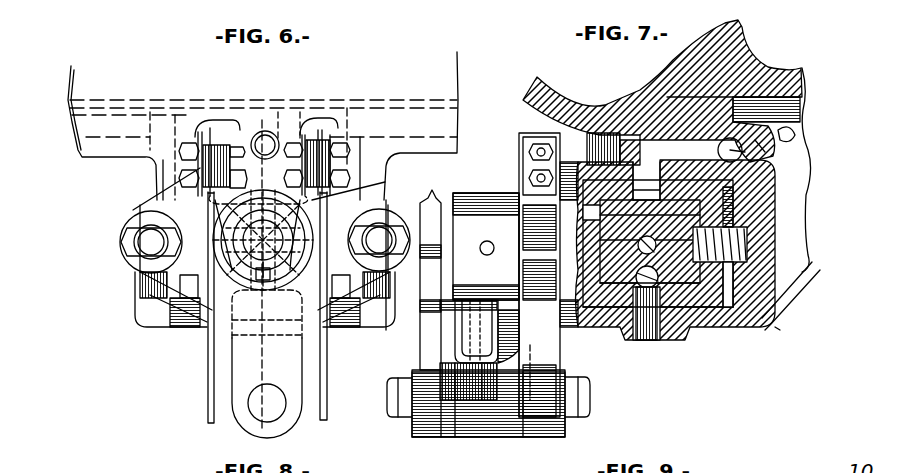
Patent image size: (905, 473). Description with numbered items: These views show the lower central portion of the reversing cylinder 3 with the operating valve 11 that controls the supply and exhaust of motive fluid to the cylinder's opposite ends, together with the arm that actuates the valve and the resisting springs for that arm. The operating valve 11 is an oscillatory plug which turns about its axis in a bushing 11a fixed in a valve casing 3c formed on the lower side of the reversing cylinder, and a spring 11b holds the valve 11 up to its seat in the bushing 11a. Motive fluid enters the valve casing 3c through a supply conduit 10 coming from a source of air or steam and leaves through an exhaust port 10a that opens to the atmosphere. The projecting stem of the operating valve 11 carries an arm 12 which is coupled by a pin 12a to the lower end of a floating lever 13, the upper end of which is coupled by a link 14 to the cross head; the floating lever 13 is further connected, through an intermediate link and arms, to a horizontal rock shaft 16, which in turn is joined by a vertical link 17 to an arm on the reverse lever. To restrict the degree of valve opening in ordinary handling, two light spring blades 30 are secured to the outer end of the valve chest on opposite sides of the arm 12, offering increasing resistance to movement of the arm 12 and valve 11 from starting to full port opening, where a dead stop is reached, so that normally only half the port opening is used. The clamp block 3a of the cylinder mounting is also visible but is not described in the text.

In FIG. 6, the reversing cylinder 3 is at (462, 66).
In FIG. 7, the reversing cylinder 3 is at (610, 98).
In FIG. 6, the clamp block 3a is at (264, 274).
In FIG. 6, the valve casing 3c is at (160, 184).
In FIG. 7, the valve casing 3c is at (752, 322).
In FIG. 7, the supply conduit 10 is at (748, 157).
In FIG. 6, the exhaust port 10a is at (395, 1).
In FIG. 7, the exhaust port 10a is at (648, 340).
In FIG. 7, the operating valve 11 is at (688, 323).
In FIG. 7, the bushing 11a is at (588, 330).
In FIG. 7, the spring 11b is at (746, 240).
In FIG. 6, the arm 12 is at (255, 353).
In FIG. 7, the arm 12 is at (500, 345).
In FIG. 7, the pin 12a is at (592, 398).
In FIG. 6, the floating lever 13 is at (418, 342).
In FIG. 7, the floating lever 13 is at (432, 342).
In FIG. 6, the link 14 is at (263, 240).
In FIG. 6, the rock shaft 16 is at (151, 242).
In FIG. 6, the vertical link 17 is at (379, 240).
In FIG. 6, the spring blades 30 is at (208, 410).
In FIG. 7, the spring blades 30 is at (537, 432).